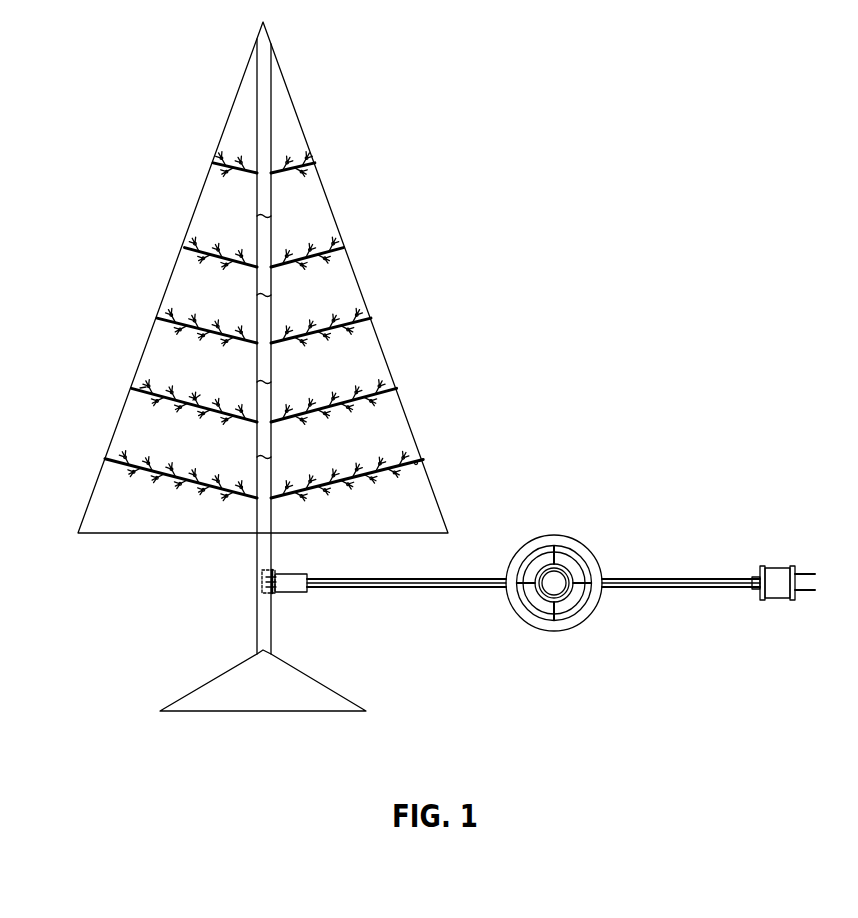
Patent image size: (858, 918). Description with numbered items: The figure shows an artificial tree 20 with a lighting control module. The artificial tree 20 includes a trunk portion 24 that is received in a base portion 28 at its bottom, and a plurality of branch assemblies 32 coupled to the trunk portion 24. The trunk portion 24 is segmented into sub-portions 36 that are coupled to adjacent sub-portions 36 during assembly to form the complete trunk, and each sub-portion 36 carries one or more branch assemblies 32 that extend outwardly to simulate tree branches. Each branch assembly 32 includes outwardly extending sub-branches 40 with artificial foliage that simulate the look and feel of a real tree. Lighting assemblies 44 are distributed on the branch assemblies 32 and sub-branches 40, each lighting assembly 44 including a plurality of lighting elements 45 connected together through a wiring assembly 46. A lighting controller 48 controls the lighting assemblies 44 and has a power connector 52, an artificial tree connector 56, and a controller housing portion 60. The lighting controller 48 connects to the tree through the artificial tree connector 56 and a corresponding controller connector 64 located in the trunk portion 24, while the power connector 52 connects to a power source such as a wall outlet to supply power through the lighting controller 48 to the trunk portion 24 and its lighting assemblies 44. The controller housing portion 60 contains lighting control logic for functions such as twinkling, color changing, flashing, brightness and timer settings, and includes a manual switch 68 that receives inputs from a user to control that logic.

The artificial tree 20 is at (300, 125).
The trunk portion 24 is at (264, 85).
The base portion 28 is at (228, 670).
The branch assembly 32 is at (140, 388).
The sub-portion 36 is at (258, 133).
The sub-branch 40 is at (193, 400).
The lighting assembly 44 is at (310, 166).
The lighting element 45 is at (419, 463).
The wiring assembly 46 is at (417, 463).
The lighting controller 48 is at (550, 534).
The power connector 52 is at (778, 572).
The artificial tree connector 56 is at (290, 588).
The controller housing portion 60 is at (592, 550).
The controller connector 64 is at (273, 570).
The manual switch 68 is at (557, 585).